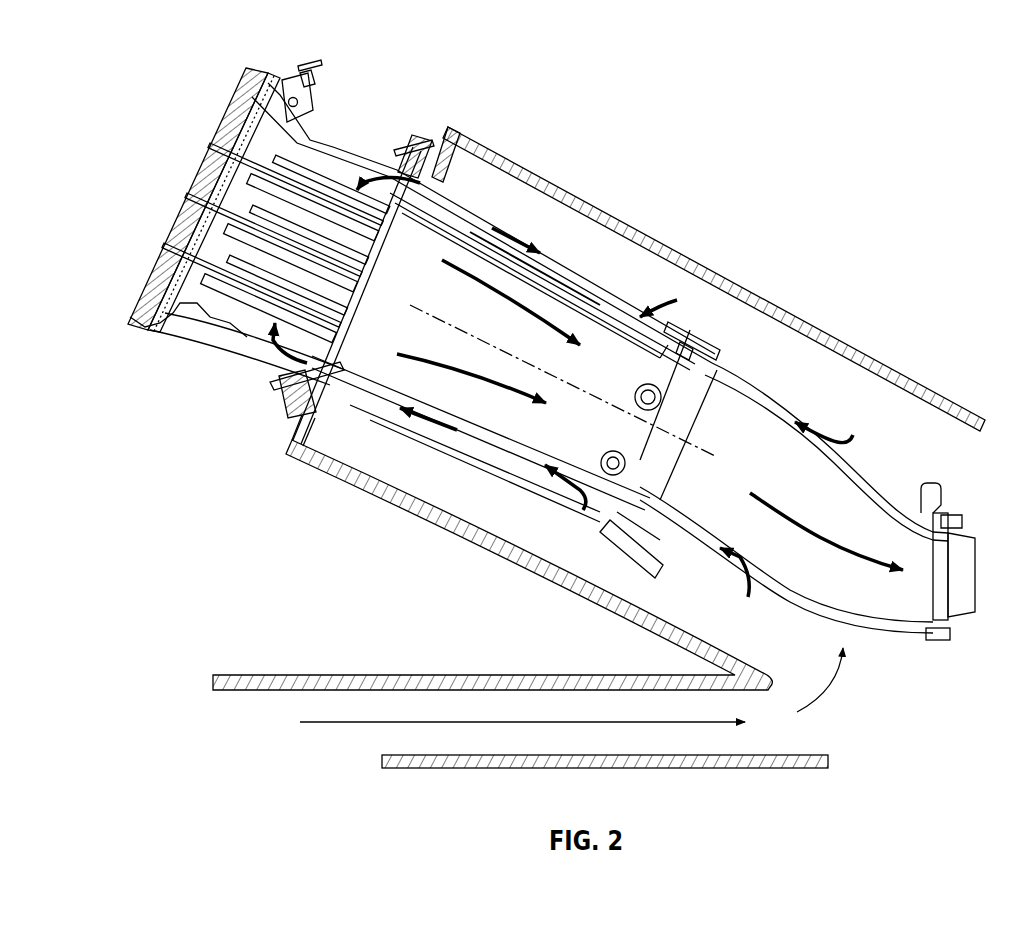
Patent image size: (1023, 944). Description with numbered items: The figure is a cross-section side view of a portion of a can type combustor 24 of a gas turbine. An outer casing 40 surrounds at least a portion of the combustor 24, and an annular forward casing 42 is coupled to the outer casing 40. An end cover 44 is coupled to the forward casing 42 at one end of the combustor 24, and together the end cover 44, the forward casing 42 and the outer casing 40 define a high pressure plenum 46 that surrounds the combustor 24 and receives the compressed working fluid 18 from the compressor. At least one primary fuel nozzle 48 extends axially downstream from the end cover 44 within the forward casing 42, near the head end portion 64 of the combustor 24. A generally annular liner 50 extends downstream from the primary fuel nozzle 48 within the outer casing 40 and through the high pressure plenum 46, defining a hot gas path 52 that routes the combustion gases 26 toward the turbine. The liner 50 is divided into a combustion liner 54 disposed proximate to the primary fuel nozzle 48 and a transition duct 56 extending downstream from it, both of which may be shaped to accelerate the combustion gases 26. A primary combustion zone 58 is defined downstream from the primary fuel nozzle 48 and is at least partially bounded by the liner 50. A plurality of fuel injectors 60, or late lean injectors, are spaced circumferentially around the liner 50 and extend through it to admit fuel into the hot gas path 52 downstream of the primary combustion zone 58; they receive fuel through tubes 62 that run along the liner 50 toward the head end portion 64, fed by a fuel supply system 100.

The compressed working fluid 18 is at (367, 170).
The combustor 24 is at (632, 88).
The combustion gases 26 is at (490, 287).
The outer casing 40 is at (819, 331).
The forward casing 42 is at (327, 140).
The end cover 44 is at (143, 298).
The high pressure plenum 46 is at (536, 569).
The primary fuel nozzle 48 is at (323, 327).
The liner 50 is at (477, 430).
The hot gas path 52 is at (762, 493).
The combustion liner 54 is at (515, 445).
The transition duct 56 is at (800, 598).
The primary combustion zone 58 is at (563, 372).
The fuel injectors 60 is at (690, 323).
The tubes 62 is at (437, 177).
The head end portion 64 is at (272, 140).
The fuel supply system 100 is at (327, 92).